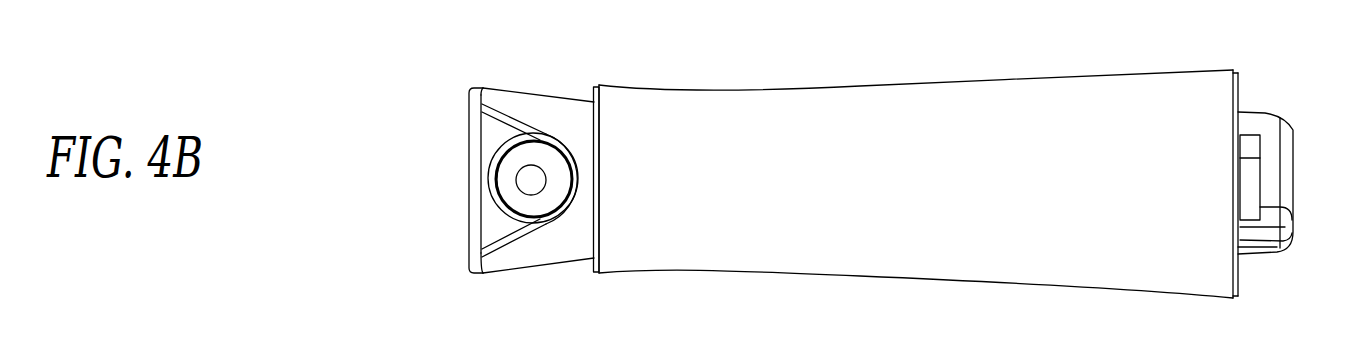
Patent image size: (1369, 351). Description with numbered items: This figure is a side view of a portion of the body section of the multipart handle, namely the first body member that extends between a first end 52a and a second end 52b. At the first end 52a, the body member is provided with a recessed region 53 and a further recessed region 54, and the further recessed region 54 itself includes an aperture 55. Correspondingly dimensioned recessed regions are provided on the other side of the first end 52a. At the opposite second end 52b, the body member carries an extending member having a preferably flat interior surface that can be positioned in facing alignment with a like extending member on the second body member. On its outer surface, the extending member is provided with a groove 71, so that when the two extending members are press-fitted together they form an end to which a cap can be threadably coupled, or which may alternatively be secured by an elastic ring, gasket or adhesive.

The first end 52a is at (540, 83).
The second end 52b is at (1270, 95).
The recessed region 53 is at (492, 127).
The further recessed region 54 is at (515, 200).
The aperture 55 is at (528, 182).
The groove 71 is at (1248, 182).